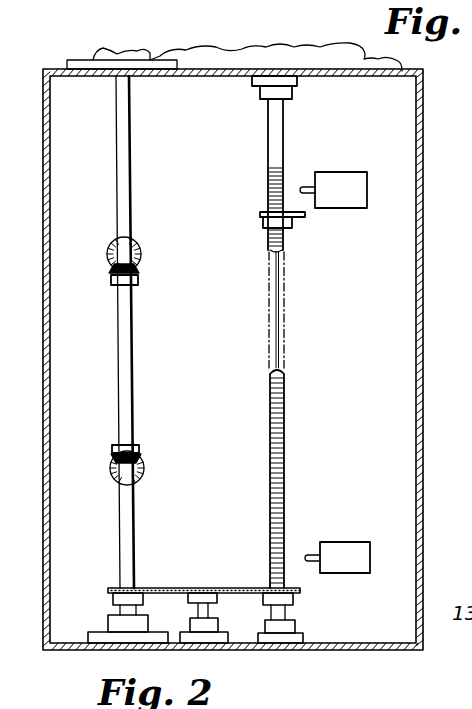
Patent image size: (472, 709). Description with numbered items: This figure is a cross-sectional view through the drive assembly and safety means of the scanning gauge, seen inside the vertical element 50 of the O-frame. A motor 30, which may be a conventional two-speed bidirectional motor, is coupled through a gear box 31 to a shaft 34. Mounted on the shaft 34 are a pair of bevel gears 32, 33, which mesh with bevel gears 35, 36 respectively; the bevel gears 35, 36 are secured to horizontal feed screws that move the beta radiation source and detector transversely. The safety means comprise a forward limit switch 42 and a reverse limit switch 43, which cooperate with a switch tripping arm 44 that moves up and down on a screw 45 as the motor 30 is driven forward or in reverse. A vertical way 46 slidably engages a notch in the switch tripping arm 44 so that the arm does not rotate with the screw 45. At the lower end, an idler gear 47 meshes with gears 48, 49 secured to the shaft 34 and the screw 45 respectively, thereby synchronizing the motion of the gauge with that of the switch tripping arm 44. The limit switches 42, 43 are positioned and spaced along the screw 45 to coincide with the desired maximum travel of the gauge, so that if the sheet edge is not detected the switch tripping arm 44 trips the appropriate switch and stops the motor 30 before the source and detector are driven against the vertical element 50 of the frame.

The motor 30 is at (308, 56).
The gear box 31 is at (120, 59).
The bevel gear 32 is at (140, 283).
The bevel gear 33 is at (140, 447).
The shaft 34 is at (132, 146).
The bevel gear 35 is at (143, 259).
The bevel gear 36 is at (111, 482).
The forward limit switch 42 is at (356, 206).
The reverse limit switch 43 is at (370, 555).
The switch tripping arm 44 is at (300, 215).
The screw 45 is at (285, 380).
The vertical way 46 is at (290, 327).
The idler gear 47 is at (208, 588).
The gear 48 is at (110, 594).
The gear 49 is at (296, 600).
The vertical element 50 is at (405, 285).